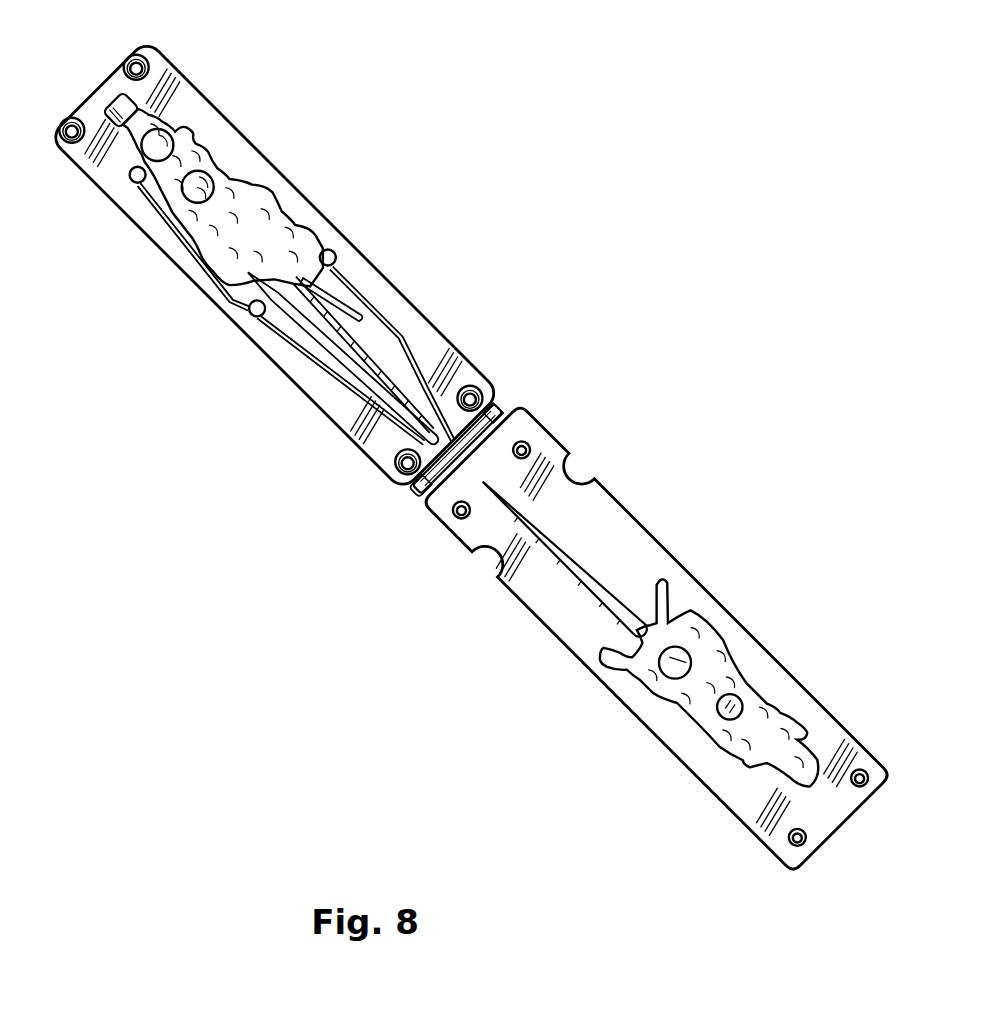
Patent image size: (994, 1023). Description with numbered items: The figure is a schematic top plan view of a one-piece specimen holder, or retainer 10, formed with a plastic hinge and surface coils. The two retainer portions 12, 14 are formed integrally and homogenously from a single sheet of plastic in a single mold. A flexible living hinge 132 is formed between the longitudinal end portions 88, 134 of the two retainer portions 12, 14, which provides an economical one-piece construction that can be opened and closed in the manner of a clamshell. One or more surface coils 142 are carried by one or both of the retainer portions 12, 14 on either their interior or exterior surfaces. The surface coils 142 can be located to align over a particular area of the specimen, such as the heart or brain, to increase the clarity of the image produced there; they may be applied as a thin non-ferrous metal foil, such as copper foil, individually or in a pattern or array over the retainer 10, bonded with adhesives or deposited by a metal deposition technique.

The retainer 10 is at (671, 312).
The retainer portion 12 is at (290, 192).
The retainer portion 14 is at (640, 540).
The longitudinal end portion 88 is at (425, 488).
The living hinge 132 is at (490, 418).
The longitudinal end portion 134 is at (427, 497).
The surface coil 142 is at (187, 197).